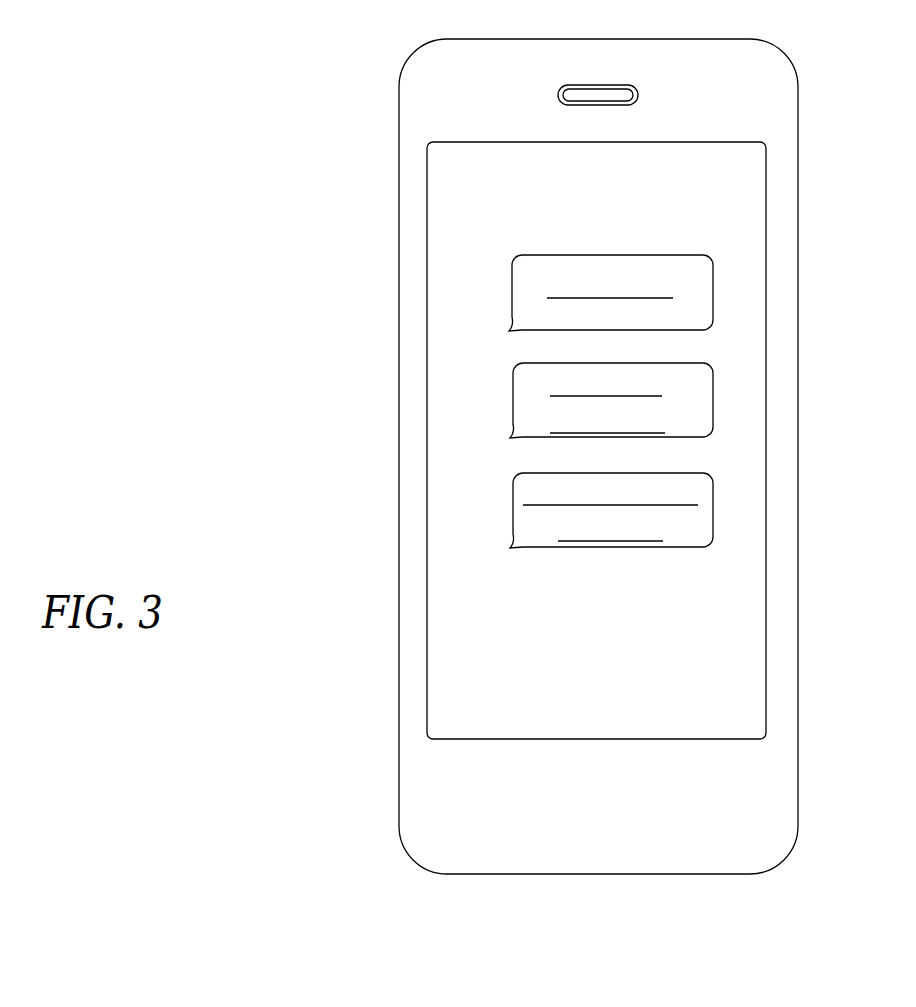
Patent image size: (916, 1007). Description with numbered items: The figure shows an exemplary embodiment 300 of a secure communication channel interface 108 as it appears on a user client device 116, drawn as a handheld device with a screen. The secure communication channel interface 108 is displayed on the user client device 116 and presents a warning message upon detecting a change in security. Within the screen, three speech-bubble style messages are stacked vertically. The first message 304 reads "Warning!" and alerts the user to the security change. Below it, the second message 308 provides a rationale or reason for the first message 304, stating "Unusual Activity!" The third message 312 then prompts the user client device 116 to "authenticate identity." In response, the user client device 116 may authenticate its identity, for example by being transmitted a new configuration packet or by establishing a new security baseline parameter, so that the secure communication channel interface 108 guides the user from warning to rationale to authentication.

The exemplary embodiment of secure communication channel interface 300 is at (315, 87).
The user client device 116 is at (592, 874).
The secure communication channel interface 108 is at (766, 439).
The first message 304 is at (512, 282).
The second message 308 is at (513, 390).
The third message 312 is at (513, 500).